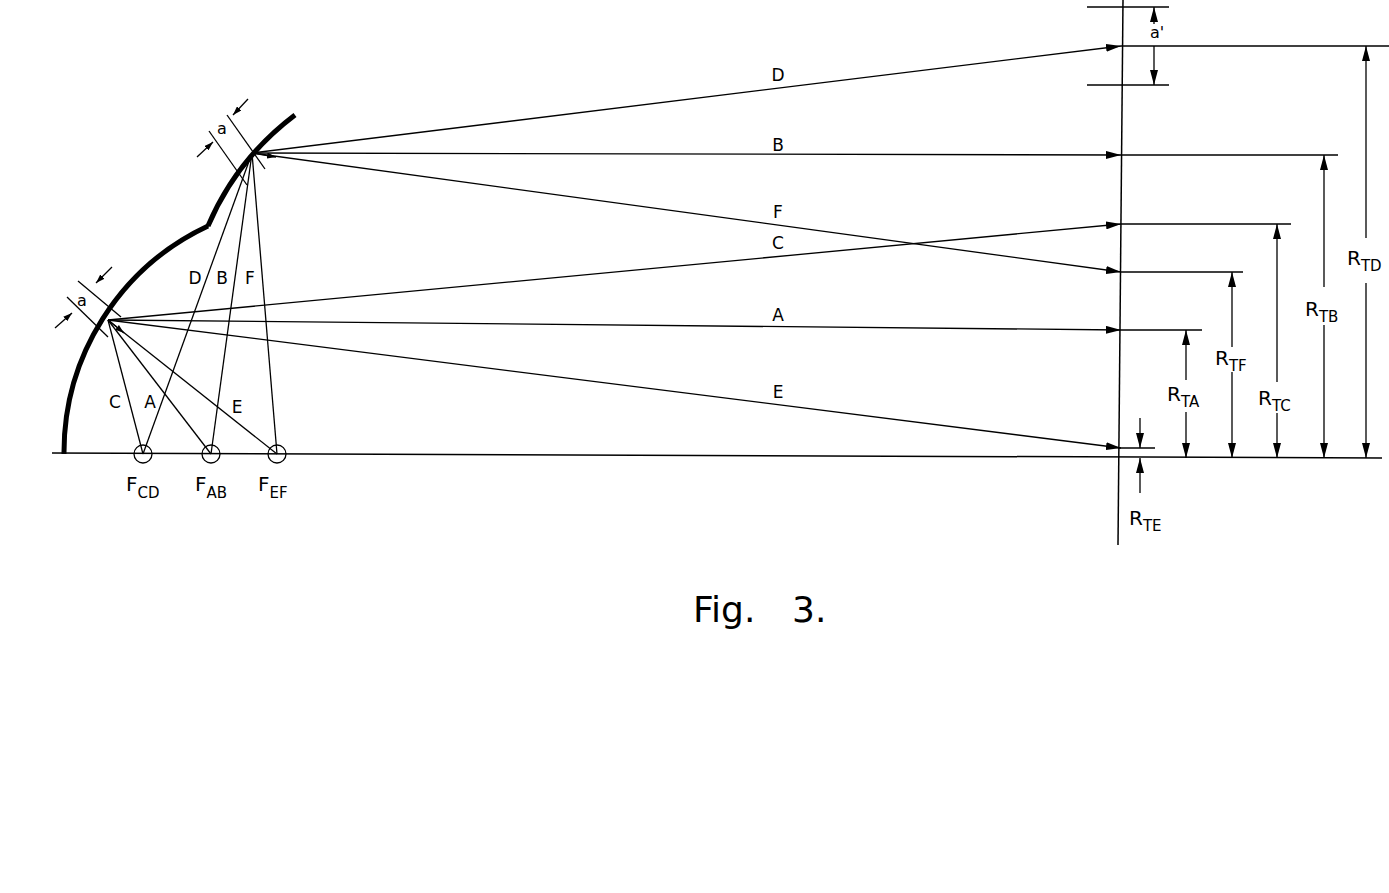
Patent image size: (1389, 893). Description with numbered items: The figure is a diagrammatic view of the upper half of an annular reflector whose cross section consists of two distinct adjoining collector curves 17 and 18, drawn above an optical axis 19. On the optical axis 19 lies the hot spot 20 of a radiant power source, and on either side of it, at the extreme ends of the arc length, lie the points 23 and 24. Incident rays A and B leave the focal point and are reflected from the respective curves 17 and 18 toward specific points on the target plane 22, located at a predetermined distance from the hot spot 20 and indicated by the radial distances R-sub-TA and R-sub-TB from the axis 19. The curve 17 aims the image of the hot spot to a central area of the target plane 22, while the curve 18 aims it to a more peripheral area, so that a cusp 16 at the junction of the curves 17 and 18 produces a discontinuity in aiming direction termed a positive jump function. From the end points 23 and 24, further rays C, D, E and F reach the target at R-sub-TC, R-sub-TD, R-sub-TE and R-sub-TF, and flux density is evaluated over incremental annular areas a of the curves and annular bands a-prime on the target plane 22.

The cusp 16 is at (204, 226).
The first collector curve 17 is at (117, 300).
The second collector curve 18 is at (222, 196).
The optical axis 19 is at (498, 456).
The hot spot 20 is at (205, 459).
The target plane 22 is at (1117, 503).
The extreme end of arc length 23 is at (136, 458).
The extreme end of arc length 24 is at (284, 458).